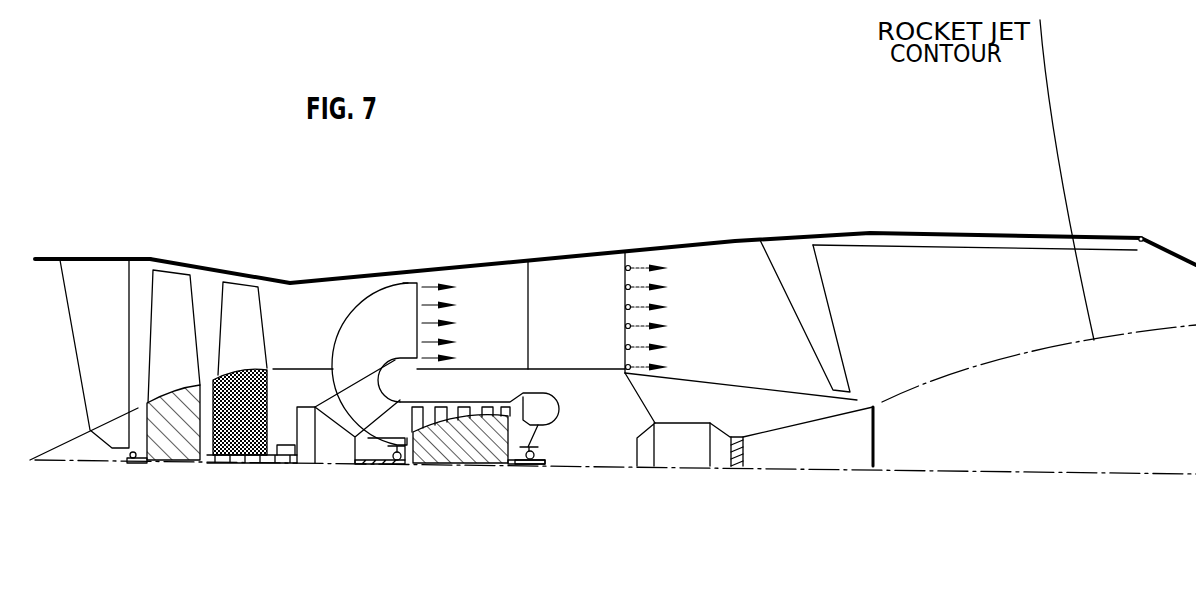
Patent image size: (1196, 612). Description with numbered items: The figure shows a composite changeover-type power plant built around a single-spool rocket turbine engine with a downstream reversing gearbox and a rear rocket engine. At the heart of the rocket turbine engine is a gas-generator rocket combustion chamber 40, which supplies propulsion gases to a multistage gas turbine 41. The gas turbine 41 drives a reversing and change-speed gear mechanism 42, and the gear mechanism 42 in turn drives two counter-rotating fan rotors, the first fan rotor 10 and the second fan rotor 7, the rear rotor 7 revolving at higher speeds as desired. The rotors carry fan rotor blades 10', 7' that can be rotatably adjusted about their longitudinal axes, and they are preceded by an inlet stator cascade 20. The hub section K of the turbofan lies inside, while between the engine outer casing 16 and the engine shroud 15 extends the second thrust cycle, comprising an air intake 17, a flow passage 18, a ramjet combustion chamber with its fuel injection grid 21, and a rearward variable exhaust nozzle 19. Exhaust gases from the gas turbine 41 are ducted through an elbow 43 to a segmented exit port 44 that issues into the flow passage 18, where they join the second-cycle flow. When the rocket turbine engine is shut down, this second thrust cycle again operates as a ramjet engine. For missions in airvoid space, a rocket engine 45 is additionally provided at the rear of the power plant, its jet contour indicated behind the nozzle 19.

The air intake 17 is at (62, 375).
The hub section K is at (77, 447).
The inlet stator cascade 20 is at (85, 272).
The fan rotor blade 10' is at (174, 312).
The first fan rotor 10 is at (166, 445).
The fan rotor blade 7' is at (242, 298).
The second fan rotor 7 is at (252, 437).
The segmented exit port 44 is at (407, 280).
The flow passage 18 is at (507, 285).
The engine shroud 15 is at (515, 370).
The engine outer casing 16 is at (617, 287).
The fuel injection grid 21 is at (675, 240).
The variable exhaust nozzle 19 is at (1145, 318).
The reversing and change-speed gear mechanism 42 is at (335, 457).
The elbow 43 is at (373, 460).
The multistage gas turbine 41 is at (470, 467).
The gas-generator rocket combustion chamber 40 is at (575, 452).
The rocket engine 45 is at (772, 460).